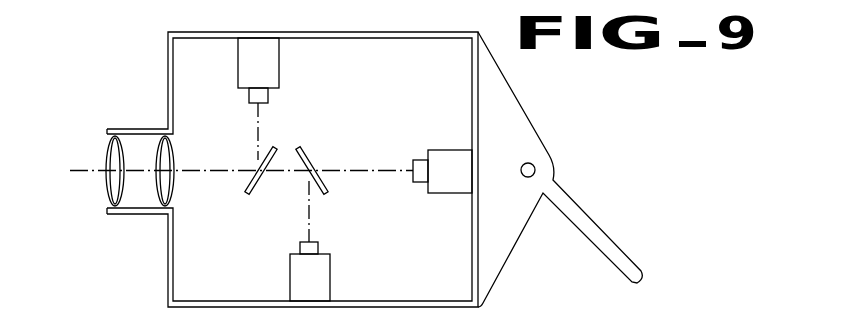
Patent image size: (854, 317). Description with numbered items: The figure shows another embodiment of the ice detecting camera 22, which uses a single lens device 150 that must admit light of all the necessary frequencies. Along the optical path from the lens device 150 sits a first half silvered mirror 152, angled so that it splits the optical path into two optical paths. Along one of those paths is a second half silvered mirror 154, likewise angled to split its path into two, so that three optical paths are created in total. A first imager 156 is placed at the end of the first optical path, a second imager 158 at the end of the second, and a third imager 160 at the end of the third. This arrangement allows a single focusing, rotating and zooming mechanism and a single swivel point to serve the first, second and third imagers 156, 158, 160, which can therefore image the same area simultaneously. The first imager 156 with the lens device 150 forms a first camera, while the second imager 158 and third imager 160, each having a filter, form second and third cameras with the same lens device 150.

The ice detecting camera 22 is at (142, 88).
The single lens device 150 is at (108, 152).
The first half silvered mirror 152 is at (253, 186).
The second half silvered mirror 154 is at (308, 155).
The first imager 156 is at (280, 61).
The second imager 158 is at (458, 194).
The third imager 160 is at (330, 275).